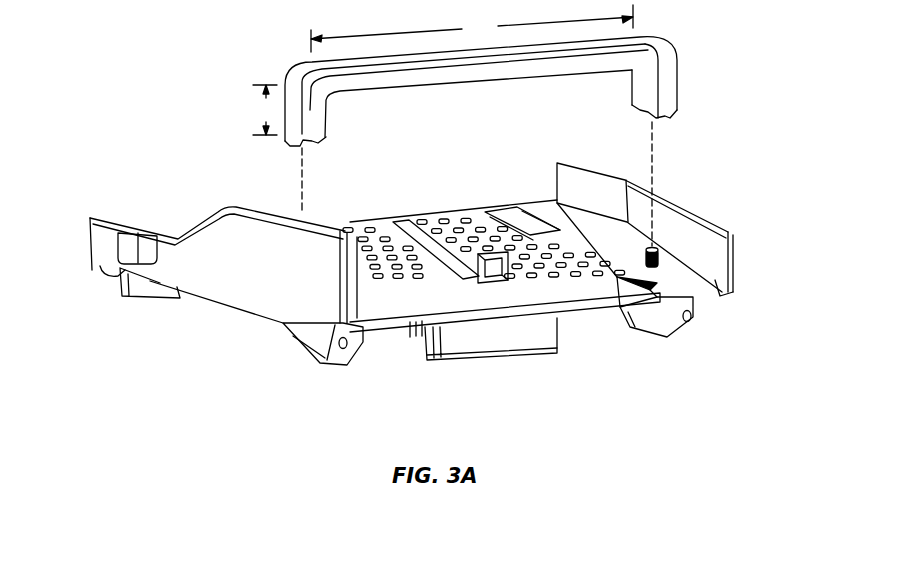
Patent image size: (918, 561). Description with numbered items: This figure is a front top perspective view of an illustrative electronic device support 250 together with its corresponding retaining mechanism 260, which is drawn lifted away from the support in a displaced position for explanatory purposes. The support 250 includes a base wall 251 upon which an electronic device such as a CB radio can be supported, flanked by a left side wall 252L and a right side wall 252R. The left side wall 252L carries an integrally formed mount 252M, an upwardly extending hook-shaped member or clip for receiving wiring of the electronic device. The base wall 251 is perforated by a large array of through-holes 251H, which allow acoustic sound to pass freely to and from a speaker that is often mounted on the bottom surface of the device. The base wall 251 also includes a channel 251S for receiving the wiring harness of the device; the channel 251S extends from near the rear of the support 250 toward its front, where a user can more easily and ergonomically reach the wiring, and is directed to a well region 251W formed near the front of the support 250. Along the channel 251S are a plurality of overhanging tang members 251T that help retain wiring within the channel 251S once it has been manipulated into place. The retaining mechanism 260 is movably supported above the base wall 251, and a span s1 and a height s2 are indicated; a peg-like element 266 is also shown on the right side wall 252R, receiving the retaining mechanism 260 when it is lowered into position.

The electronic device support 250 is at (258, 291).
The base wall 251 is at (555, 216).
The through-holes 251H is at (369, 227).
The channel 251S is at (428, 223).
The overhanging tang members 251T is at (455, 263).
The well region 251W is at (480, 296).
The left side wall 252L is at (223, 265).
The mount 252M is at (108, 270).
The right side wall 252R is at (670, 212).
The retaining mechanism 260 is at (682, 91).
The peg 266 is at (660, 255).